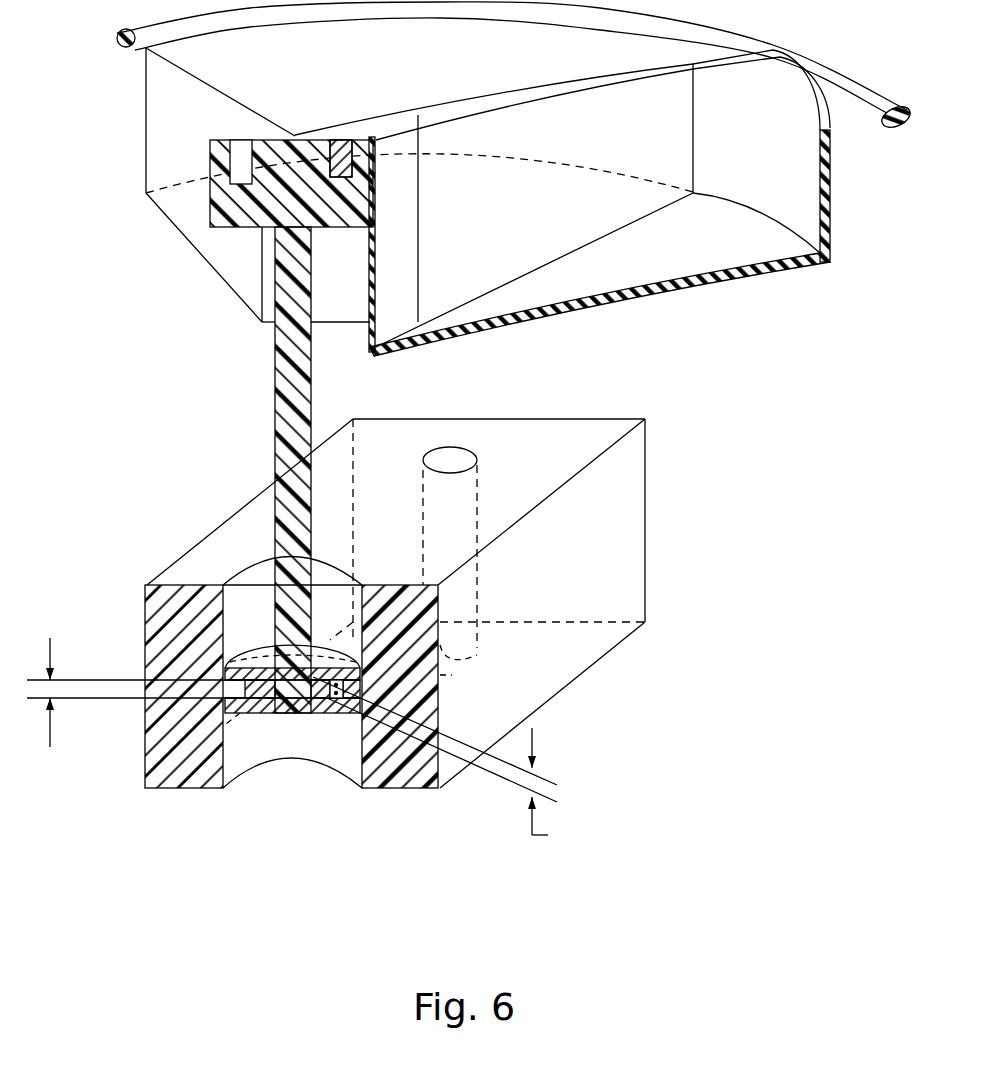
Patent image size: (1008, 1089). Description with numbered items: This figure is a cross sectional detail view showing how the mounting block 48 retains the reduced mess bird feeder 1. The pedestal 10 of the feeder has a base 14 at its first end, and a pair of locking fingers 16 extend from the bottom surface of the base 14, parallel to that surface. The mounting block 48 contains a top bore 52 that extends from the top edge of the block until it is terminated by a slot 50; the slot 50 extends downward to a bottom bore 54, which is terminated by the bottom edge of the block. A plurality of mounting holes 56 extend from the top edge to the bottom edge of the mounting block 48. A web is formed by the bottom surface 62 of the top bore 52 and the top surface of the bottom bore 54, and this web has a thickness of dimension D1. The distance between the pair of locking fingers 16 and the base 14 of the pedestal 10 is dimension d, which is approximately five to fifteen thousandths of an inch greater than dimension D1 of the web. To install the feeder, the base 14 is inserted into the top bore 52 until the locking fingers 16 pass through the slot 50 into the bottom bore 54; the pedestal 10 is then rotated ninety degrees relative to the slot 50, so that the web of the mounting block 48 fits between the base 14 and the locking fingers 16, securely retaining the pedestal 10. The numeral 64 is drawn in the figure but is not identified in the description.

The reduced mess bird feeder 1 is at (165, 248).
The pedestal 10 is at (383, 393).
The base 14 is at (252, 646).
The pair of locking fingers 16 is at (283, 713).
The mounting block 48 is at (612, 580).
The slot 50 is at (255, 700).
The top bore 52 is at (345, 568).
The bottom bore 54 is at (317, 707).
The mounting holes 56 is at (475, 460).
The bottom surface of the top bore 62 is at (243, 657).
The locking pin 64 is at (325, 700).
The web thickness dimension D1 is at (52, 679).
The locking finger spacing dimension d is at (548, 789).